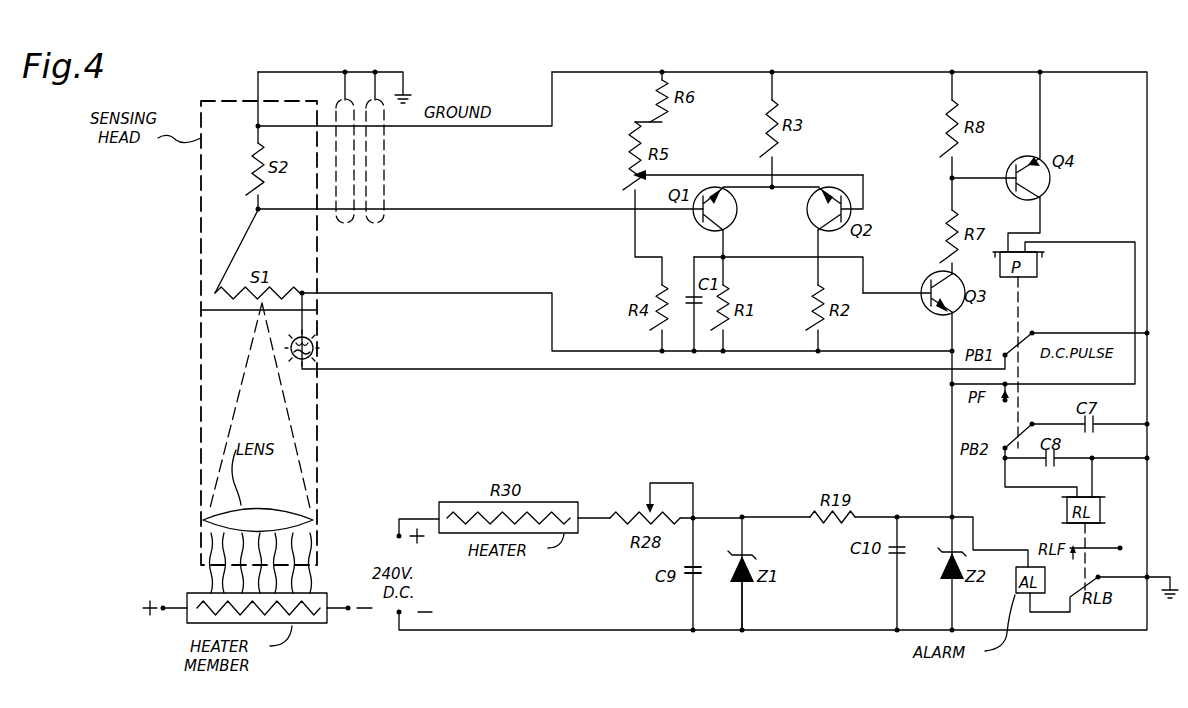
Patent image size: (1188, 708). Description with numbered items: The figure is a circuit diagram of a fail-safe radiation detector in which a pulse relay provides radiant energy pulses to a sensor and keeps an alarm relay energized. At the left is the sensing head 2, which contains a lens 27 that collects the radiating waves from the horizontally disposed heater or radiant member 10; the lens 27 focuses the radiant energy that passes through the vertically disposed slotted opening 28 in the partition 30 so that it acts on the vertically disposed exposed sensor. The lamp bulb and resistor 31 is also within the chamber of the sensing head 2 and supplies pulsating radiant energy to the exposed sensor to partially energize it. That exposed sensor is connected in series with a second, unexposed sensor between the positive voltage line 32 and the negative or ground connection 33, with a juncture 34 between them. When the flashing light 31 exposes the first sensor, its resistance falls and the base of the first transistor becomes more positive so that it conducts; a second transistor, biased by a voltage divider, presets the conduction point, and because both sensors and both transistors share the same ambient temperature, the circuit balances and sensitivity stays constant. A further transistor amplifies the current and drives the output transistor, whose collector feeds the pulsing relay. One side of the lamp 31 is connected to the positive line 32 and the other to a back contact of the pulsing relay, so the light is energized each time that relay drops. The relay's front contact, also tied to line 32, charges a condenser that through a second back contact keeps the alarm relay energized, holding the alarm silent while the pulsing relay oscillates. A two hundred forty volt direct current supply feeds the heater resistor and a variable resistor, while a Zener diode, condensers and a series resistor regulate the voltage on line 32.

The sensing head 2 is at (201, 243).
The heater or radiant member 10 is at (190, 595).
The lens 27 is at (263, 506).
The slotted opening 28 is at (261, 303).
The partition 30 is at (198, 319).
The lamp bulb and resistor 31 is at (316, 349).
The positive voltage line 32 is at (552, 293).
The negative or ground connection 33 is at (552, 126).
The juncture 34 is at (262, 208).